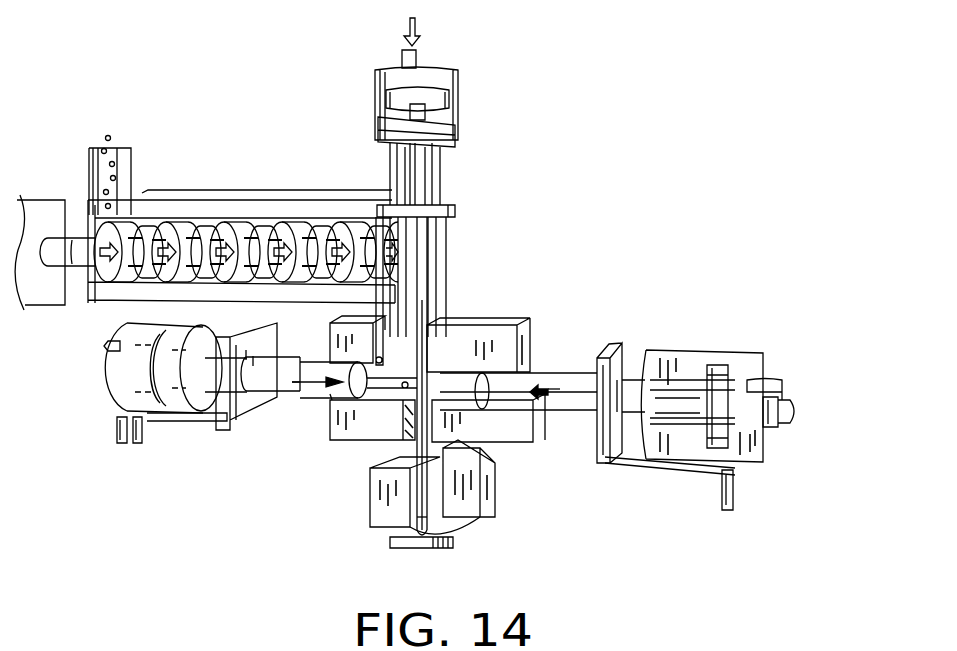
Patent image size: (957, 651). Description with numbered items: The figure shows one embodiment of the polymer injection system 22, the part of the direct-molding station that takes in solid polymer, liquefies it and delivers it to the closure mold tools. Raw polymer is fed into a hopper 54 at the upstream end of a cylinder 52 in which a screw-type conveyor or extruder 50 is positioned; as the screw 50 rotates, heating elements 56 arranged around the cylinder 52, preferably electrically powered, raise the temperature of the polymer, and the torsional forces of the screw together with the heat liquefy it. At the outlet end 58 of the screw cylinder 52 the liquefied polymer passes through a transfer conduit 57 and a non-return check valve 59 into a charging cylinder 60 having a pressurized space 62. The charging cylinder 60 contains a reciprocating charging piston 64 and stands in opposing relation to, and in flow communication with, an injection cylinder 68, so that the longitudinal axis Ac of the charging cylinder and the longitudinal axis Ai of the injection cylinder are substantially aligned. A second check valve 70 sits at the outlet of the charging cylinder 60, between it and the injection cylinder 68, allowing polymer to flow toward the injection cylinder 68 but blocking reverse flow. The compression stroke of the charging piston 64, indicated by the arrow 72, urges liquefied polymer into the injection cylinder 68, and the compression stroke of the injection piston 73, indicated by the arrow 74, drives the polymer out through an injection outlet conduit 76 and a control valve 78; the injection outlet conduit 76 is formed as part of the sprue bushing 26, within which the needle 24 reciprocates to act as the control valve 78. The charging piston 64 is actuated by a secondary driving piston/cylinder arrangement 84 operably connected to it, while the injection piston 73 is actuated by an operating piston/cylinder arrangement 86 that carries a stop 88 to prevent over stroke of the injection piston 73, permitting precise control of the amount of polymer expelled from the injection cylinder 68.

The polymer injection system 22 is at (471, 103).
The needle 24 is at (432, 512).
The sprue bushing 26 is at (432, 430).
The screw-type conveyor or extruder 50 is at (187, 222).
The cylinder 52 is at (218, 212).
The hopper 54 is at (116, 150).
The heating elements 56 is at (272, 193).
The transfer conduit 57 is at (390, 300).
The outlet end 58 is at (392, 288).
The check valve 59 is at (446, 385).
The charging cylinder 60 is at (358, 400).
The pressurized space 62 is at (376, 402).
The charging piston 64 is at (293, 393).
The injection cylinder 68 is at (528, 335).
The check valve 70 is at (428, 402).
The arrow 72 is at (320, 399).
The injection piston 73 is at (492, 462).
The arrow 74 is at (558, 374).
The injection outlet conduit 76 is at (492, 510).
The control valve 78 is at (412, 546).
The driving piston/cylinder arrangement 84 is at (120, 380).
The operating piston/cylinder arrangement 86 is at (767, 455).
The stop 88 is at (722, 492).
The longitudinal axis of the charging cylinder Ac is at (328, 402).
The longitudinal axis of the injection cylinder Ai is at (505, 393).